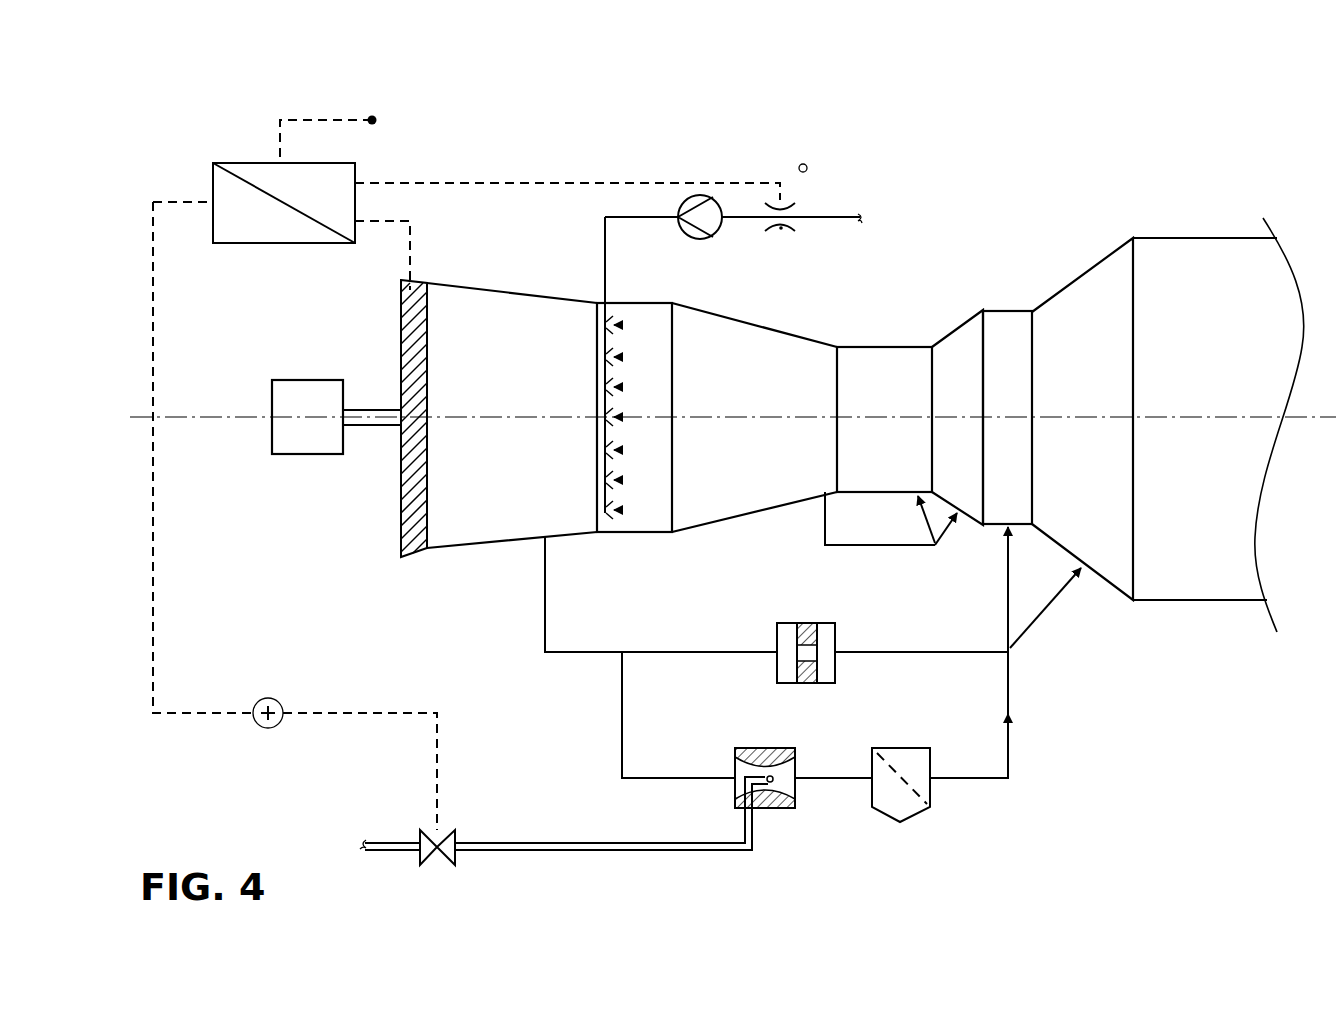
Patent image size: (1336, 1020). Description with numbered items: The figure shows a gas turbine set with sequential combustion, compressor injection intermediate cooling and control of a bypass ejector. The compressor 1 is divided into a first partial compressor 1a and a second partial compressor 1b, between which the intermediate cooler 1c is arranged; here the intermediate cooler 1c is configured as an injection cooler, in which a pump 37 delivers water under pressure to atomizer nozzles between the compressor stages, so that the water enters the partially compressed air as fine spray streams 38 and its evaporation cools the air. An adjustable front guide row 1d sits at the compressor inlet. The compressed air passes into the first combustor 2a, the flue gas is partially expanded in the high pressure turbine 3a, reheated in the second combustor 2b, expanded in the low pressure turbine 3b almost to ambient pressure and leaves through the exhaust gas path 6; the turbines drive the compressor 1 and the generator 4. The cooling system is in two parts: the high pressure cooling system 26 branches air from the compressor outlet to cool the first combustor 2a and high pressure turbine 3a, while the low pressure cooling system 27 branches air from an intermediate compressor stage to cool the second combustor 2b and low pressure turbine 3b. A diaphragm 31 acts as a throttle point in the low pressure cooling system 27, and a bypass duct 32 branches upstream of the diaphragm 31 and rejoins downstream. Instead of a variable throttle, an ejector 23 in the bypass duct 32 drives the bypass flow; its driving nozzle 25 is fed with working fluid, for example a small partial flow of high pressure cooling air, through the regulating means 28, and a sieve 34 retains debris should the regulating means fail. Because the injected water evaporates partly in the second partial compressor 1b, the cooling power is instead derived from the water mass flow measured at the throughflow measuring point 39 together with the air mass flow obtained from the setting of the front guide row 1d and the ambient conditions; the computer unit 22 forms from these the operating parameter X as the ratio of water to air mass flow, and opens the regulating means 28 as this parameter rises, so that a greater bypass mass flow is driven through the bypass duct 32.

The compressor 1 is at (836, 492).
The first partial compressor 1a is at (513, 391).
The second partial compressor 1b is at (773, 391).
The intermediate cooler 1c is at (664, 391).
The adjustable front guide row 1d is at (415, 340).
The first combustor 2a is at (906, 391).
The second combustor 2b is at (1030, 391).
The high pressure turbine 3a is at (978, 391).
The low pressure turbine 3b is at (1100, 391).
The generator 4 is at (318, 434).
The exhaust gas path 6 is at (1220, 391).
The computer unit 22 is at (355, 163).
The ejector 23 is at (778, 783).
The driving nozzle 25 is at (768, 808).
The high pressure cooling system 26 is at (823, 522).
The low pressure cooling system 27 is at (545, 565).
The regulating means 28 is at (420, 827).
The diaphragm 31 is at (835, 624).
The bypass duct 32 is at (622, 710).
The sieve 34 is at (915, 815).
The pump 37 is at (715, 235).
The spray streams 38 is at (619, 387).
The throughflow measuring point 39 is at (782, 230).